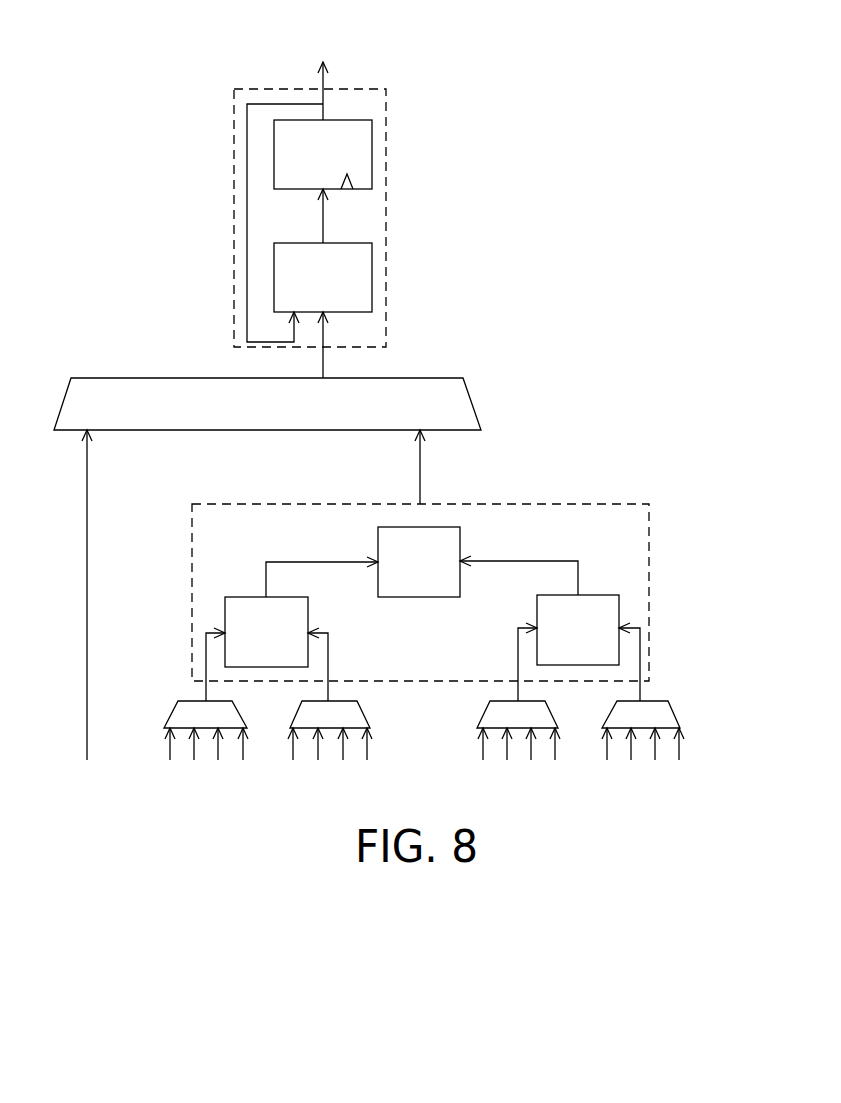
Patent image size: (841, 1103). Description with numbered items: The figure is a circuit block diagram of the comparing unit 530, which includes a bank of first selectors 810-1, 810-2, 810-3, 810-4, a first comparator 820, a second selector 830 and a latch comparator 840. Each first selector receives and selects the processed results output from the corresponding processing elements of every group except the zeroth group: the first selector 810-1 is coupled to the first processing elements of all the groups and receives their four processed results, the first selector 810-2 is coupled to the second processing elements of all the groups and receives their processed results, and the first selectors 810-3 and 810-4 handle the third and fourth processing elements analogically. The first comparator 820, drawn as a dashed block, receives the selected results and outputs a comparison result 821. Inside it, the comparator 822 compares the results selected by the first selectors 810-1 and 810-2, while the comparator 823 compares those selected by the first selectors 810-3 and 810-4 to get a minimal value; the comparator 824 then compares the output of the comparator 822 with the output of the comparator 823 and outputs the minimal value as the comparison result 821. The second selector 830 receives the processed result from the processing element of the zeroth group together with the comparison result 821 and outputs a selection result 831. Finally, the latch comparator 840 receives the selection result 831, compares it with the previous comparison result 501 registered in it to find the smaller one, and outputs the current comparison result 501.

The comparison result 501 is at (323, 77).
The latch comparator 840 is at (386, 218).
The selection result 831 is at (323, 366).
The second selector 830 is at (475, 397).
The comparison result 821 is at (420, 465).
The first comparator 820 is at (649, 568).
The comparator 822 is at (308, 612).
The comparator 823 is at (537, 617).
The comparator 824 is at (460, 543).
The first selector 810-1 is at (176, 713).
The first selector 810-2 is at (370, 713).
The first selector 810-3 is at (480, 713).
The first selector 810-4 is at (680, 713).
The comparing unit 530 is at (824, 780).